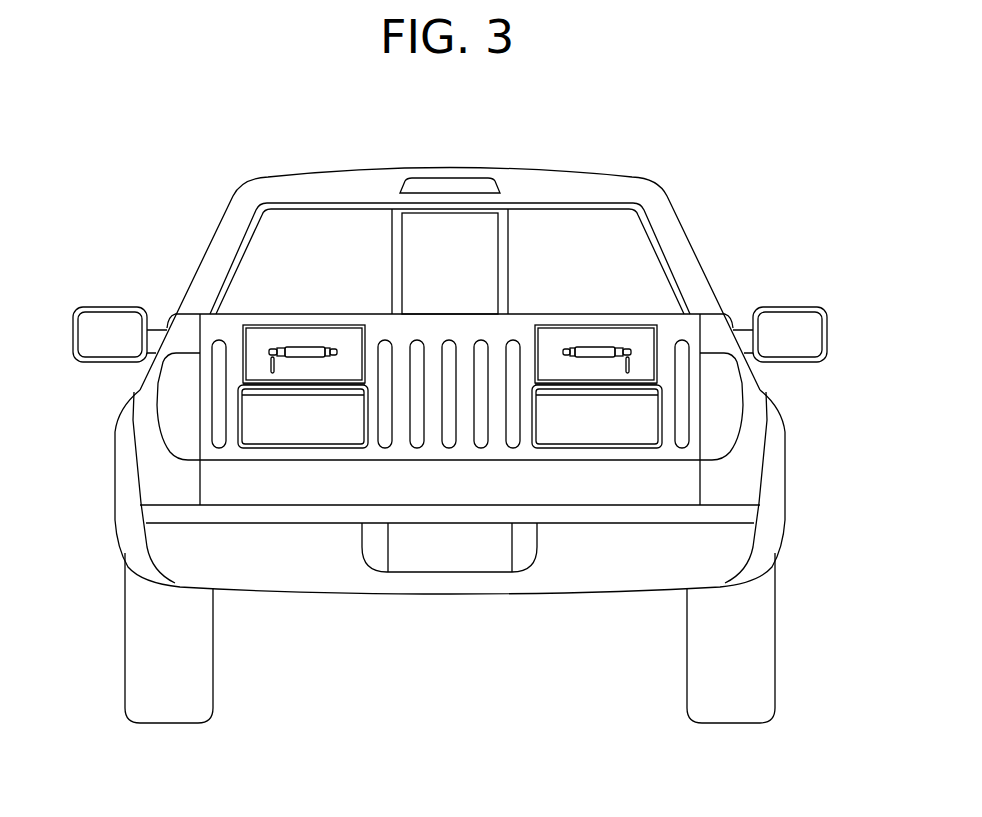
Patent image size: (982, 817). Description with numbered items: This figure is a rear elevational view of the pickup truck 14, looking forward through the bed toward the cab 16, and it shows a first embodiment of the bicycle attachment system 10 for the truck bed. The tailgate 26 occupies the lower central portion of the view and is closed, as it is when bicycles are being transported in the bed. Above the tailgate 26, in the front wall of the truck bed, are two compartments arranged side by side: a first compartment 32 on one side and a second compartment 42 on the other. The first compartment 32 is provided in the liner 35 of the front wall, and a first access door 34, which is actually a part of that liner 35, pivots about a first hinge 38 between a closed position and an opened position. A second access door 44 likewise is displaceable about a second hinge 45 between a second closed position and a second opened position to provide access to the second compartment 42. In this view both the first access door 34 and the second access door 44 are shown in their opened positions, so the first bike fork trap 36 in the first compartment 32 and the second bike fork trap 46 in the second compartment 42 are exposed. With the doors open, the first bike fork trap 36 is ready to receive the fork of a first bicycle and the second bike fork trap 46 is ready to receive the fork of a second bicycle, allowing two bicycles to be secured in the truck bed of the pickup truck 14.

The bicycle attachment system 10 is at (114, 456).
The pickup truck 14 is at (773, 477).
The cab 16 is at (688, 223).
The tailgate 26 is at (400, 490).
The first compartment 32 is at (253, 342).
The first access door 34 is at (273, 420).
The liner 35 is at (467, 350).
The first bike fork trap 36 is at (298, 347).
The first hinge 38 is at (338, 383).
The second compartment 42 is at (645, 338).
The second access door 44 is at (632, 417).
The second hinge 45 is at (573, 380).
The second bike fork trap 46 is at (595, 348).